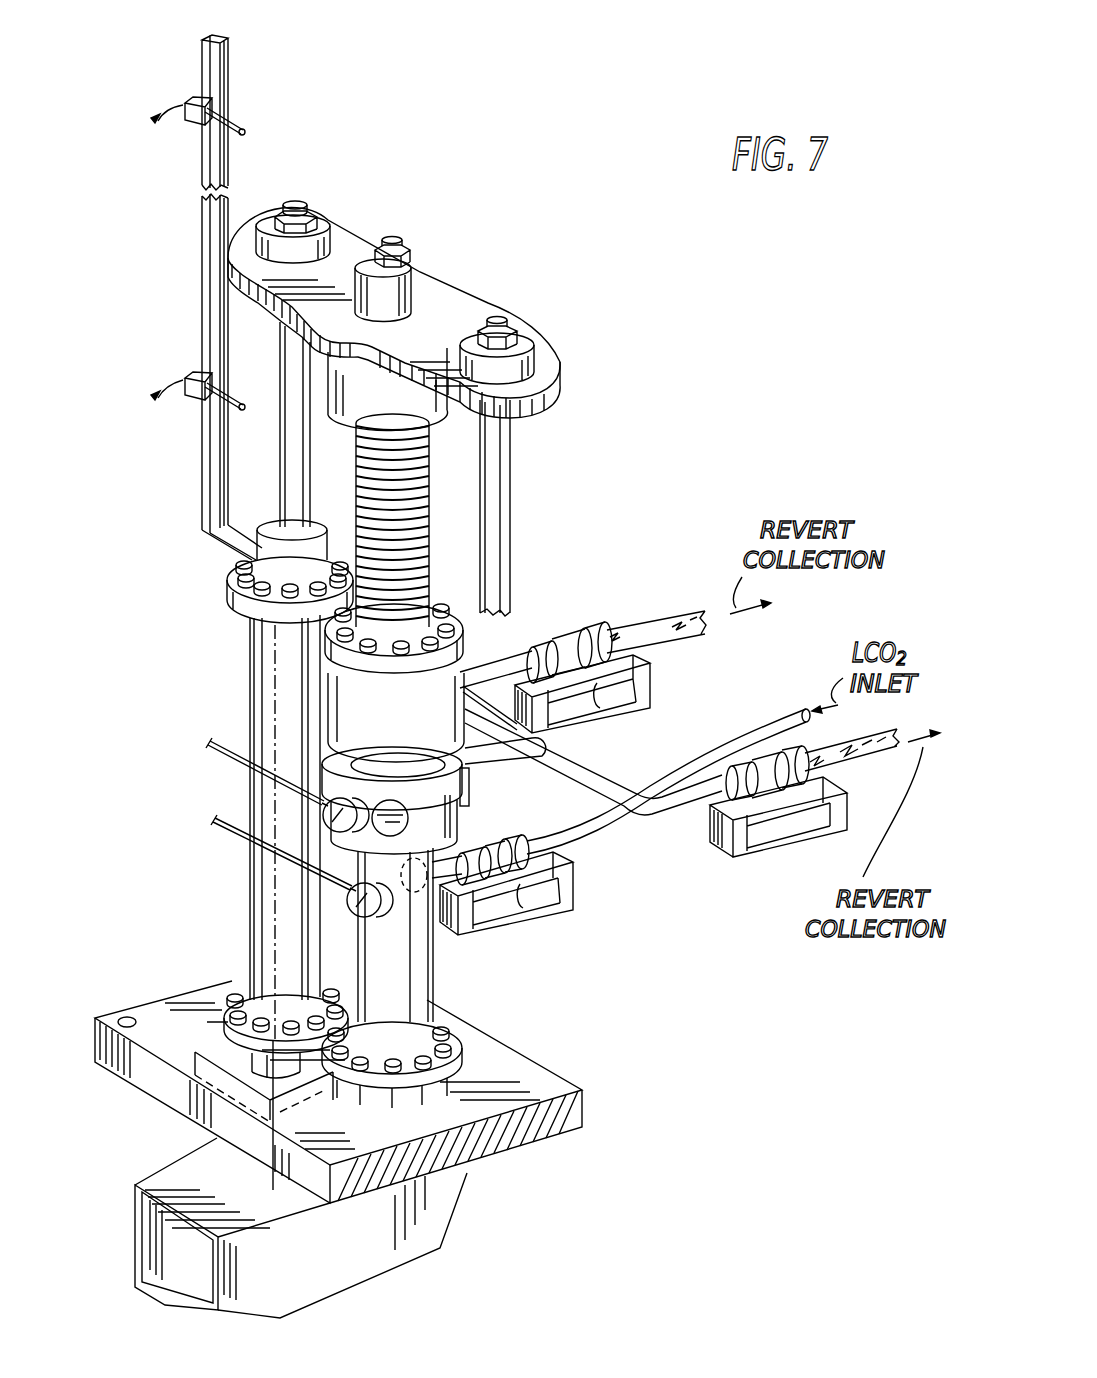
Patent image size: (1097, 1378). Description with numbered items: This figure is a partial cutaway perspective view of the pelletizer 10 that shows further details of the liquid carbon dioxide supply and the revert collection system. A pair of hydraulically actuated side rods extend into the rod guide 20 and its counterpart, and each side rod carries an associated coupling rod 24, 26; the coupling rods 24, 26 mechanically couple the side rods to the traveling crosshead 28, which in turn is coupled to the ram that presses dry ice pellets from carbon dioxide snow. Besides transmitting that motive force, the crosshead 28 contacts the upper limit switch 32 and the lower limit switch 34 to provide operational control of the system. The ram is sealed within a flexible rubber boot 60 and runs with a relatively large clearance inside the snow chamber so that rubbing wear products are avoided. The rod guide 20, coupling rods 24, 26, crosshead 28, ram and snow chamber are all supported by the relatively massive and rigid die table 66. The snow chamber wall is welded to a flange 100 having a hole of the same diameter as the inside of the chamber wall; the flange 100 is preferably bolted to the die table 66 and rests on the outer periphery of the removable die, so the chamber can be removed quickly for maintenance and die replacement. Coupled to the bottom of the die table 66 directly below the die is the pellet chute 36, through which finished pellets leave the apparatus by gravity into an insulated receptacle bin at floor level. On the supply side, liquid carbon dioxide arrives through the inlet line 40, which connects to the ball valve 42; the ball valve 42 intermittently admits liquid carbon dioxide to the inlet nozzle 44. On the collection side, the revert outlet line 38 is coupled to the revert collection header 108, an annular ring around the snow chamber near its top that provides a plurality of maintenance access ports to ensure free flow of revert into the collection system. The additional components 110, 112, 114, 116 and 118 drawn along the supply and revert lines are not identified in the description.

The pelletizer 10 is at (657, 390).
The rod guide 20 is at (250, 657).
The coupling rod 24 is at (276, 478).
The coupling rod 26 is at (514, 459).
The traveling crosshead 28 is at (458, 287).
The upper limit switch 32 is at (190, 97).
The lower limit switch 34 is at (186, 372).
The pellet chute 36 is at (441, 1220).
The revert outlet line 38 is at (577, 769).
The inlet line 40 is at (737, 742).
The ball valve 42 is at (567, 911).
The inlet nozzle 44 is at (443, 862).
The flexible rubber boot 60 is at (429, 517).
The die table 66 is at (545, 1080).
The flange 100 is at (453, 1040).
The revert collection header 108 is at (333, 770).
The upper revert collection line clamp 110 is at (563, 633).
The outlet line clamp 112 is at (708, 825).
The upper clamp bracket 114 is at (650, 689).
The right clamp bracket 116 is at (758, 855).
The lower clamp bracket 118 is at (533, 920).